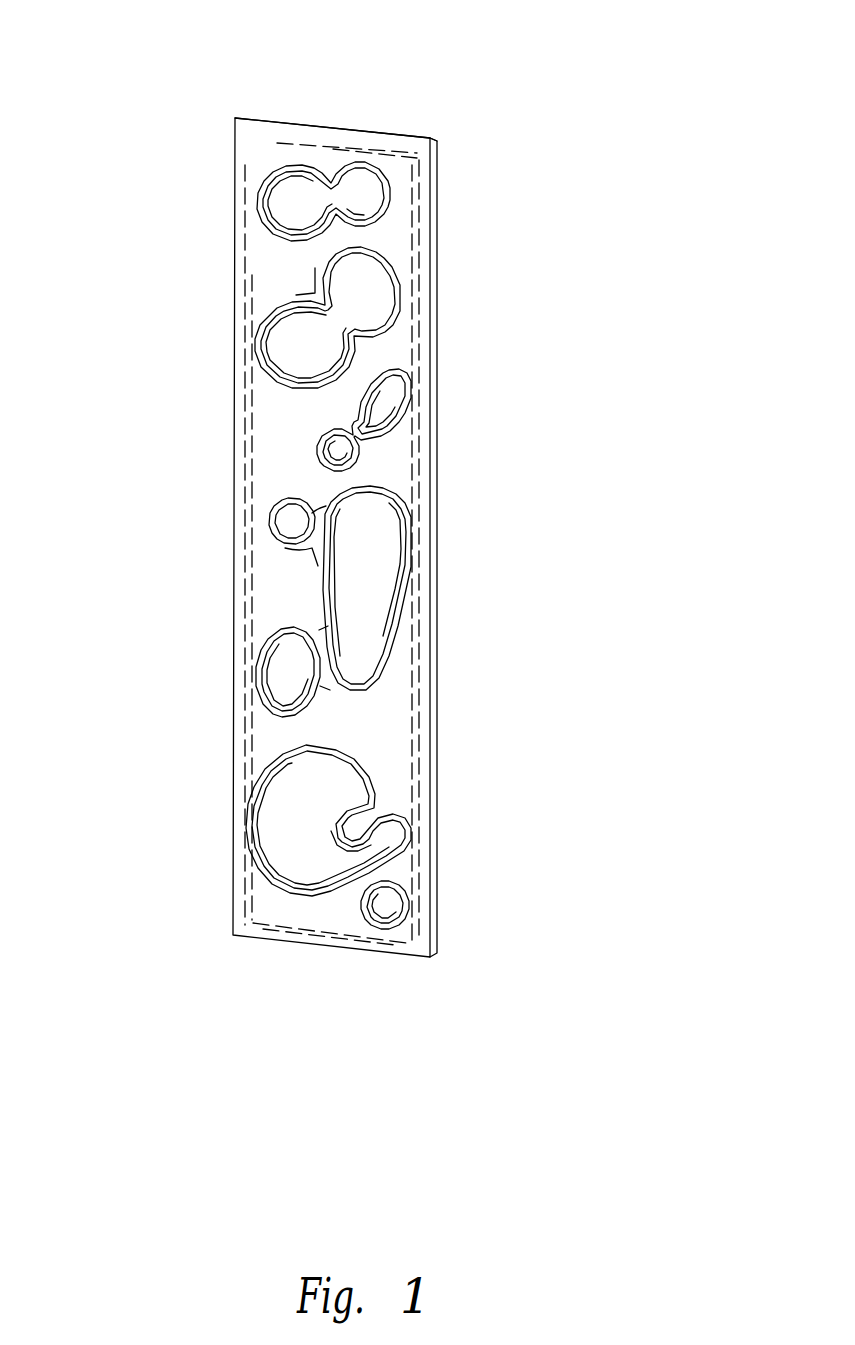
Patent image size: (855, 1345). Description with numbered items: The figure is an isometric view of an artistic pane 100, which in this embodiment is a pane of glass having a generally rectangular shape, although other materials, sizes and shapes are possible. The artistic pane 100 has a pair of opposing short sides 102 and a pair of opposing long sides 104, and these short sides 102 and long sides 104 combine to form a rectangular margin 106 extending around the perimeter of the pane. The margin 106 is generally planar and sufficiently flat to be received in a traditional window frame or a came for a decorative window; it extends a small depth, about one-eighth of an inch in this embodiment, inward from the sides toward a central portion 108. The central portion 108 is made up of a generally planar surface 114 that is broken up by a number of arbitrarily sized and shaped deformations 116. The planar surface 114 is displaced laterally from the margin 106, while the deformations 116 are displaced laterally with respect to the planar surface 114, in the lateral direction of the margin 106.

The artistic pane 100 is at (138, 68).
The short sides 102 is at (340, 128).
The long sides 104 is at (437, 520).
The margin 106 is at (425, 187).
The central portion 108 is at (270, 263).
The planar surface 114 is at (380, 741).
The deformations 116 is at (367, 603).